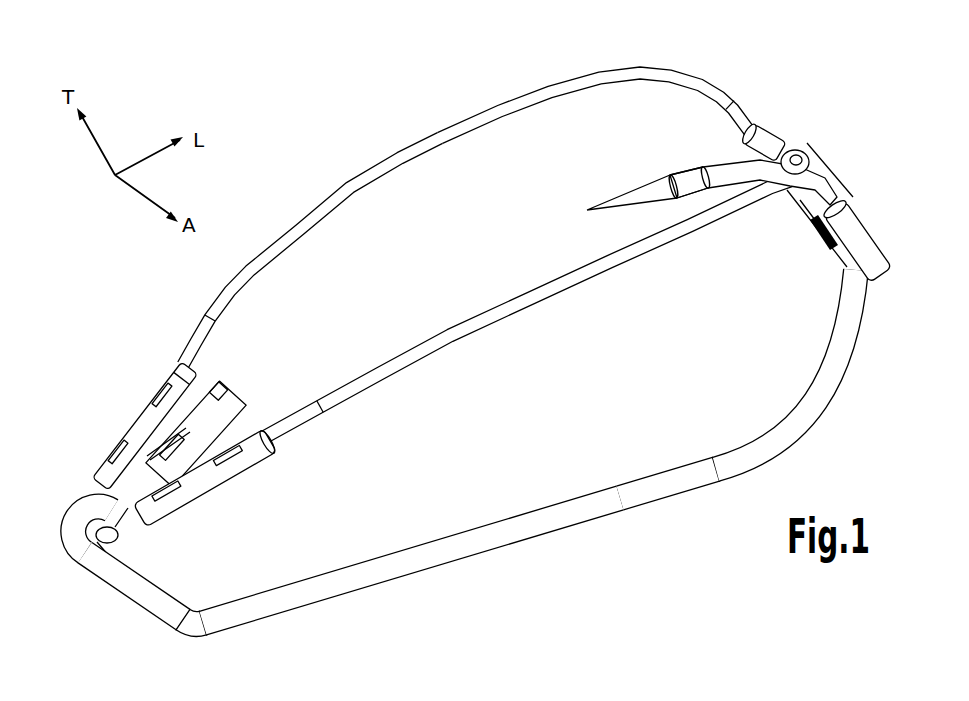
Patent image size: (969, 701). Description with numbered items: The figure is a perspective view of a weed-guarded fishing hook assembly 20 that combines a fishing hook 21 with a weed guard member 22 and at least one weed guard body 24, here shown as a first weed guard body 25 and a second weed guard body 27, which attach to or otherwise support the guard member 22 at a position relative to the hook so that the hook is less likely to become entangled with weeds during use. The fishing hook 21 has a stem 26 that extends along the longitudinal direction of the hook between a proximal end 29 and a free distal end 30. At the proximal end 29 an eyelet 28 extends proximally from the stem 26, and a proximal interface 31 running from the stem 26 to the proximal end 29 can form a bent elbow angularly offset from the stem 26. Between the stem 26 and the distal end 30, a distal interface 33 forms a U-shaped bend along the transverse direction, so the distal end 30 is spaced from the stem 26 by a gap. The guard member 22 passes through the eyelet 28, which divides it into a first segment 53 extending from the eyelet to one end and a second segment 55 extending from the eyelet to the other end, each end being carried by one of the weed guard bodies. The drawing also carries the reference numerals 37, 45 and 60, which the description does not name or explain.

The weed-guarded fishing hook assembly 20 is at (348, 137).
The fishing hook 21 is at (537, 547).
The weed guard member 22 is at (418, 142).
The at least one weed guard body 24 is at (787, 128).
The first weed guard body 25 is at (867, 212).
The stem 26 is at (636, 510).
The second weed guard body 27 is at (137, 408).
The eyelet 28 is at (73, 506).
The proximal end 29 is at (127, 603).
The free distal end 30 is at (684, 163).
The proximal interface 31 is at (187, 640).
The distal interface 33 is at (846, 381).
The component 37 is at (788, 700).
The component 45 is at (498, 689).
The first segment 53 is at (497, 325).
The second segment 55 is at (497, 106).
The component 60 is at (572, 698).